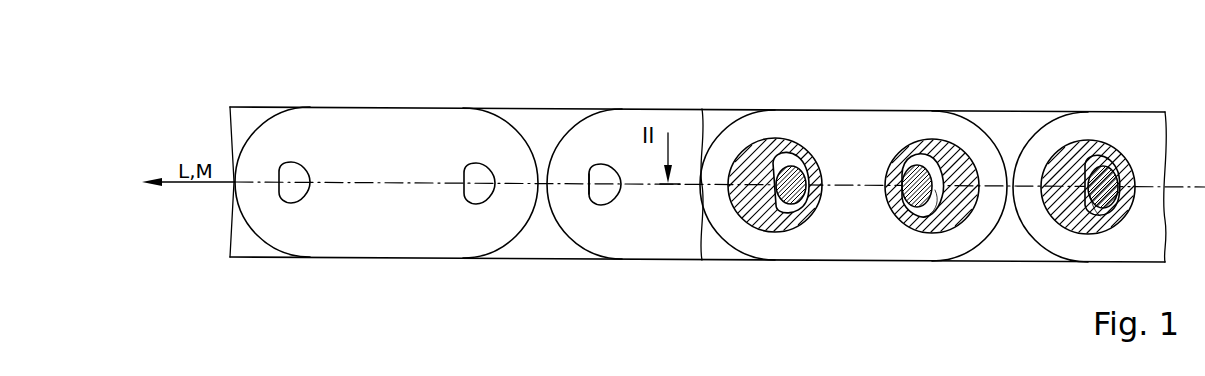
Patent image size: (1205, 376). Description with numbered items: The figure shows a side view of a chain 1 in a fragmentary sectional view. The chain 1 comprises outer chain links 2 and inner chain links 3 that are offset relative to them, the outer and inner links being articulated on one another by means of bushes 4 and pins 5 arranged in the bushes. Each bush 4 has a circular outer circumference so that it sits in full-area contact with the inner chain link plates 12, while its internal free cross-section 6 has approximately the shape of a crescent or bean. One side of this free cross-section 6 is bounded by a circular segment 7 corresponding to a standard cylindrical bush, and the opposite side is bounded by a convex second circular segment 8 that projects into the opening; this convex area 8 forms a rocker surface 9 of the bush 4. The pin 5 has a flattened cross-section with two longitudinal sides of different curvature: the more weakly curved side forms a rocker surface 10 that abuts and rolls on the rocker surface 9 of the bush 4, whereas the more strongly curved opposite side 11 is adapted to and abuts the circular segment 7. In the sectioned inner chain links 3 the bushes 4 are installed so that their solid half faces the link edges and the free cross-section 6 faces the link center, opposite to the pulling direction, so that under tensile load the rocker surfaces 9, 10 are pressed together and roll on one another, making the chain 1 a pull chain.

The chain 1 is at (190, 111).
The outer chain link 2 is at (323, 247).
The inner chain link 3 is at (833, 125).
The bush 4 is at (750, 165).
The pin 5 is at (476, 196).
The internal free cross-section 6 is at (775, 162).
The circular segment 7 is at (910, 155).
The second circular segment 8 is at (1006, 253).
The rocker surface of the bush 9 is at (942, 192).
The rocker surface of the pin 10 is at (672, 240).
The opposite side of the pin 11 is at (597, 200).
The inner chain link plate 12 is at (853, 248).